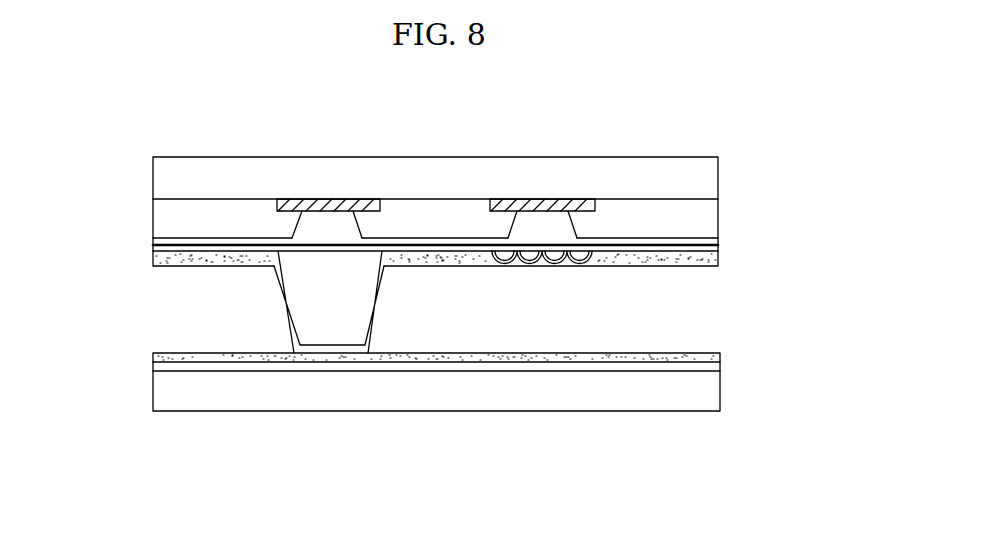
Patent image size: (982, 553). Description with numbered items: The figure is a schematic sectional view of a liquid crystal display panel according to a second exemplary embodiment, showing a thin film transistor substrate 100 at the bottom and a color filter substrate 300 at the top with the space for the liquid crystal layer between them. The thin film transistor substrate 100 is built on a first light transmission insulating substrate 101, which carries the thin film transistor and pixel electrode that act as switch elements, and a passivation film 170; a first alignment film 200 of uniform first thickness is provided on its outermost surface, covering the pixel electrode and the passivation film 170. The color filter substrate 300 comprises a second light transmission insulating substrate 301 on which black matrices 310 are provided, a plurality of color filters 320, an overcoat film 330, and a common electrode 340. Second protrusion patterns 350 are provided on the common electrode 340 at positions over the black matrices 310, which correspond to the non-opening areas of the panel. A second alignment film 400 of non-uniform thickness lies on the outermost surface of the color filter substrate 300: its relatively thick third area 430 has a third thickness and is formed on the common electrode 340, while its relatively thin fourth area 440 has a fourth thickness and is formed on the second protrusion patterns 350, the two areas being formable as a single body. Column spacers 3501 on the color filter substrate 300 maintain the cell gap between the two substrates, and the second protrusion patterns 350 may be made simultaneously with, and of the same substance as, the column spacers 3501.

The thin film transistor substrate 100 is at (133, 404).
The first light transmission insulating substrate 101 is at (722, 392).
The passivation film 170 is at (722, 367).
The first alignment film 200 is at (722, 357).
The color filter substrate 300 is at (622, 146).
The second light transmission insulating substrate 301 is at (716, 171).
The black matrices 310 is at (327, 206).
The color filters 320 is at (195, 205).
The overcoat film 330 is at (153, 241).
The common electrode 340 is at (153, 252).
The second protrusion patterns 350 is at (495, 248).
The column spacers 3501 is at (289, 247).
The second alignment film 400 is at (497, 276).
The third area 430 is at (720, 258).
The fourth area 440 is at (583, 263).